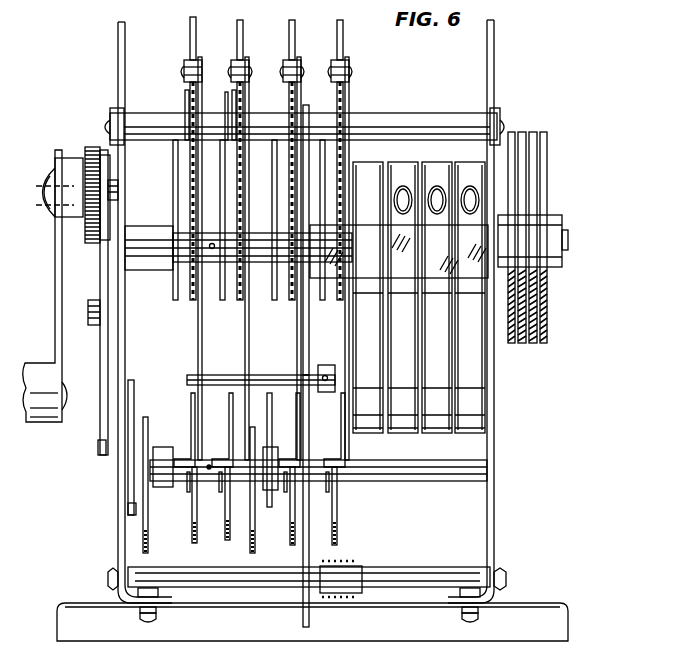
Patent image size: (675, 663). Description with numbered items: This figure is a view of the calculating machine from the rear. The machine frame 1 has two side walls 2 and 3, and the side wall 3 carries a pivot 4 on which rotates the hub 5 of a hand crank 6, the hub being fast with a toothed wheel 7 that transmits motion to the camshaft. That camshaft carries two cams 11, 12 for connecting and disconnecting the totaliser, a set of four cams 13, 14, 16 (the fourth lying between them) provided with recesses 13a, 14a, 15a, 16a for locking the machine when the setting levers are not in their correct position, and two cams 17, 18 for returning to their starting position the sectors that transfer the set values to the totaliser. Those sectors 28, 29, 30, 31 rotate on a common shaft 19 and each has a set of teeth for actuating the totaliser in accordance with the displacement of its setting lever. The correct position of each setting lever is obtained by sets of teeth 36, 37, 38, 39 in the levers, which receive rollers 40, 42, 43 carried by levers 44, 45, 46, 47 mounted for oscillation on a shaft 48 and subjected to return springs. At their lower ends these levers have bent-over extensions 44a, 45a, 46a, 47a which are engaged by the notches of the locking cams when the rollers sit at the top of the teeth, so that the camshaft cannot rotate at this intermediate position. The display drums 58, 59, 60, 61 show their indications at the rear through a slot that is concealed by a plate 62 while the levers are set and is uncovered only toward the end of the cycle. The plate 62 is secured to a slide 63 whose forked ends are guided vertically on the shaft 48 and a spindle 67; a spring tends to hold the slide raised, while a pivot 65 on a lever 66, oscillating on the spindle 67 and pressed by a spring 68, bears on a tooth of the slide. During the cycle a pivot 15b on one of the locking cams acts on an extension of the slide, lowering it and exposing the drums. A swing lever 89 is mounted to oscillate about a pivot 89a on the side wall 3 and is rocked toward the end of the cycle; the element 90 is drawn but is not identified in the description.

The machine frame 1 is at (65, 603).
The side wall 2 is at (494, 530).
The side wall 3 is at (118, 548).
The pivot 4 is at (112, 186).
The hub 5 is at (70, 160).
The crank 6 is at (55, 290).
The toothed wheel 7 is at (92, 244).
The cam 11 is at (128, 509).
The cam 12 is at (148, 522).
The cam 13 is at (192, 535).
The recess 13a is at (192, 470).
The cam 14 is at (226, 535).
The recess 14a is at (225, 470).
The recess 15a is at (290, 500).
The pivot 15b is at (296, 516).
The cam 16 is at (337, 526).
The recess 16a is at (326, 482).
The cam 17 is at (250, 545).
The cam 18 is at (268, 402).
The shaft 19 is at (148, 238).
The sector 28 is at (175, 172).
The sector 29 is at (230, 172).
The sector 30 is at (274, 184).
The sector 31 is at (325, 180).
The set of teeth 36 is at (337, 94).
The set of teeth 37 is at (290, 95).
The set of teeth 38 is at (240, 104).
The set of teeth 39 is at (188, 98).
The roller 40 is at (342, 62).
The roller 42 is at (250, 160).
The roller 43 is at (188, 62).
The lever 44 is at (345, 330).
The bent over extension 44a is at (338, 456).
The lever 45 is at (296, 328).
The bent over extension 45a is at (290, 456).
The lever 46 is at (235, 331).
The bent over extension 46a is at (222, 455).
The lever 47 is at (198, 331).
The bent over extension 47a is at (191, 455).
The shaft 48 is at (408, 118).
The display drum 58 is at (473, 433).
The display drum 59 is at (441, 433).
The display drum 60 is at (407, 433).
The display drum 61 is at (374, 433).
The plate 62 is at (367, 230).
The slide 63 is at (305, 105).
The pivot 65 is at (258, 378).
The lever 66 is at (303, 551).
The spindle 67 is at (420, 568).
The spring 68 is at (350, 564).
The swing lever 89 is at (98, 443).
The pivot 89a is at (92, 326).
The hub 90 is at (102, 158).